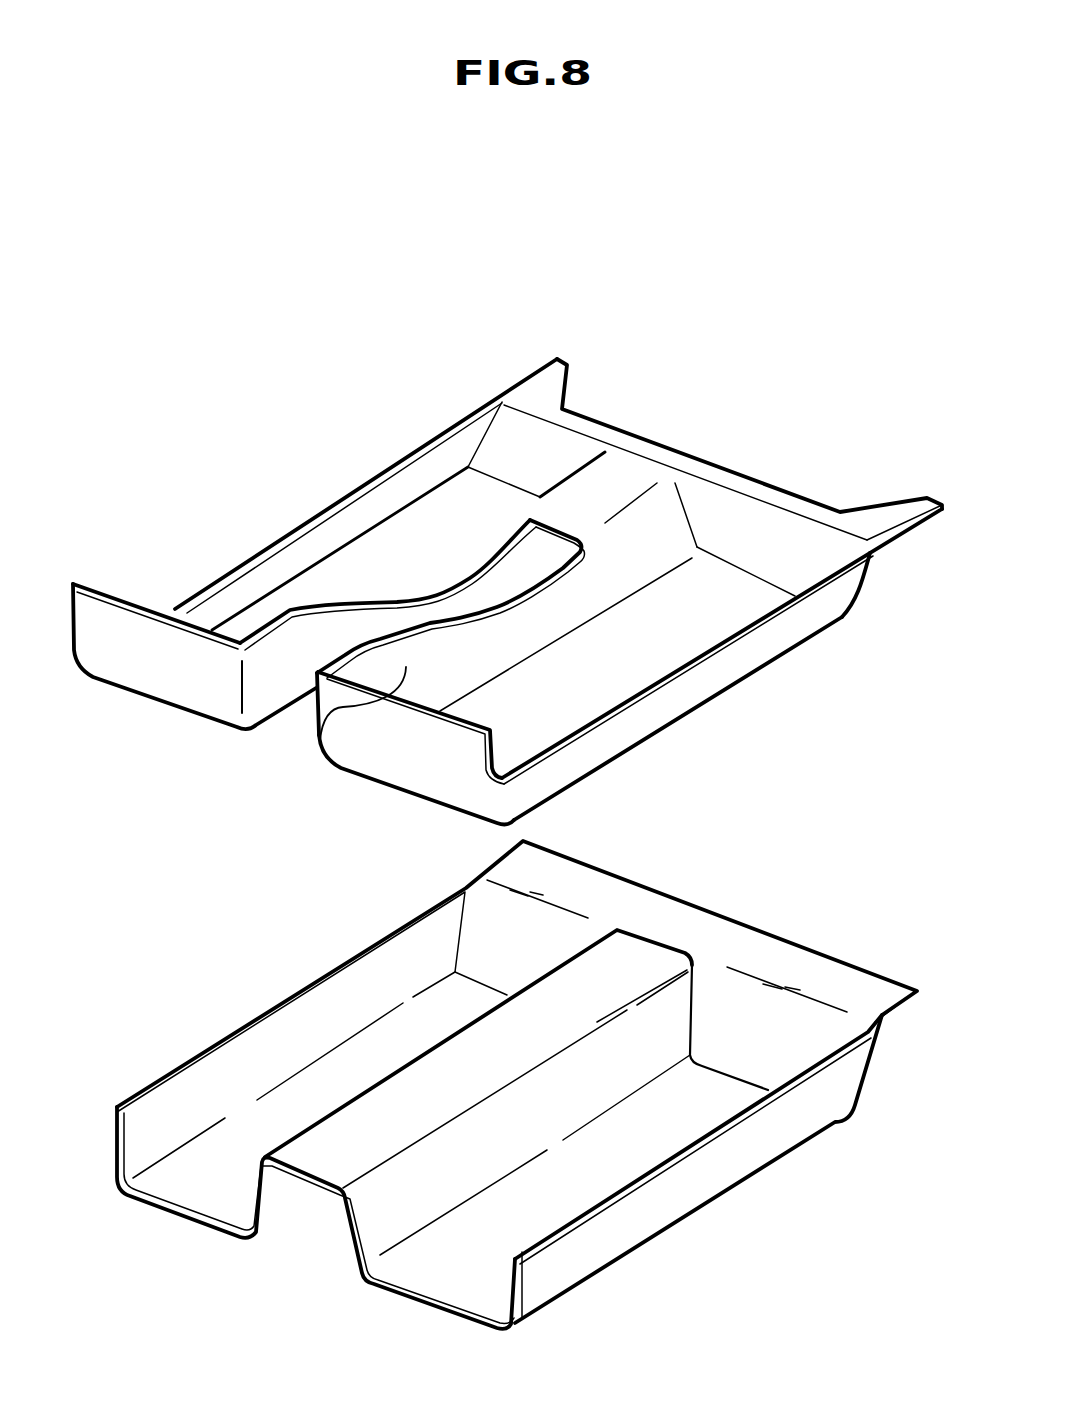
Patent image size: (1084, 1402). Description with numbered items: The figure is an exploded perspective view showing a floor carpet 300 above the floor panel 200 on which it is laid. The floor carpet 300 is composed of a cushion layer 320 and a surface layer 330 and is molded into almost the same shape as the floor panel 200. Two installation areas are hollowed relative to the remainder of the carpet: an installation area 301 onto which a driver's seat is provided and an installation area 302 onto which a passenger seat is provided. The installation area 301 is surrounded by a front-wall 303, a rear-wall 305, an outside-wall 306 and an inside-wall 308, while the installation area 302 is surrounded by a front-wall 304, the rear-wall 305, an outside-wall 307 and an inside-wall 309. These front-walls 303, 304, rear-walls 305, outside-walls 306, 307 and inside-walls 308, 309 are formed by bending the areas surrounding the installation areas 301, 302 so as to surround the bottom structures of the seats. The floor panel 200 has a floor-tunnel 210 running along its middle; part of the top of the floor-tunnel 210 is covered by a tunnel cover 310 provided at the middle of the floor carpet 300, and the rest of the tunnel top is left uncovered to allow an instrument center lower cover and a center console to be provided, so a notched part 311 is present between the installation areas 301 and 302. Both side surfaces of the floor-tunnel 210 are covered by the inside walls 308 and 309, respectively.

The floor panel 200 is at (738, 1205).
The floor-tunnel 210 is at (627, 958).
The floor carpet 300 is at (742, 702).
The installation area 301 is at (583, 695).
The installation area 302 is at (373, 563).
The front-wall 303 is at (410, 755).
The front-wall 304 is at (169, 666).
The rear-wall 305 is at (557, 460).
The outside-wall 306 is at (607, 746).
The outside-wall 307 is at (272, 577).
The inside-wall 308 is at (318, 740).
The inside-wall 309 is at (273, 664).
The tunnel cover 310 is at (618, 478).
The notched part 311 is at (493, 587).
The cushion layer 320 is at (760, 650).
The surface layer 330 is at (733, 602).